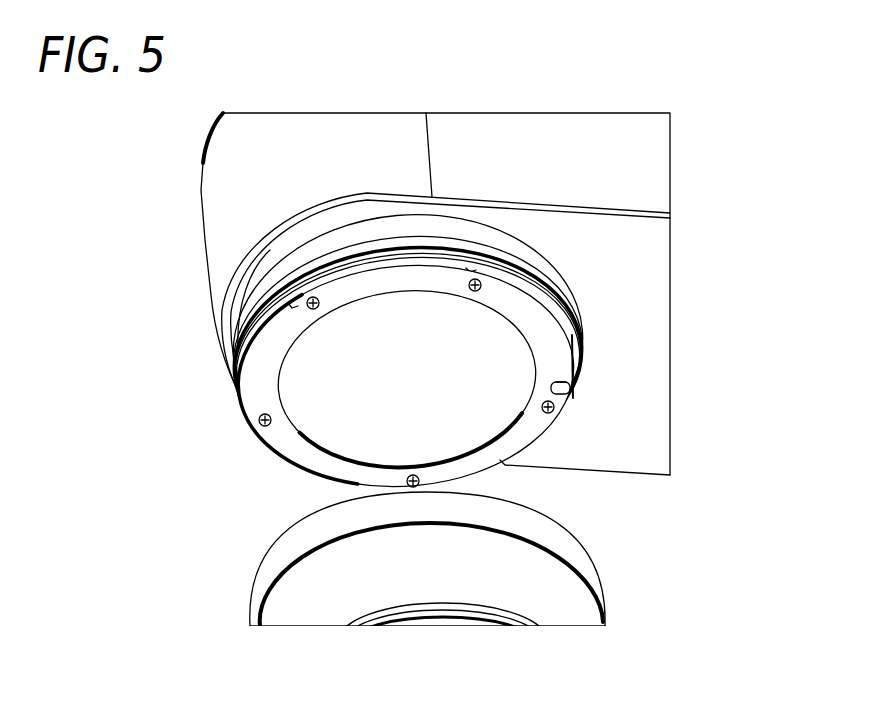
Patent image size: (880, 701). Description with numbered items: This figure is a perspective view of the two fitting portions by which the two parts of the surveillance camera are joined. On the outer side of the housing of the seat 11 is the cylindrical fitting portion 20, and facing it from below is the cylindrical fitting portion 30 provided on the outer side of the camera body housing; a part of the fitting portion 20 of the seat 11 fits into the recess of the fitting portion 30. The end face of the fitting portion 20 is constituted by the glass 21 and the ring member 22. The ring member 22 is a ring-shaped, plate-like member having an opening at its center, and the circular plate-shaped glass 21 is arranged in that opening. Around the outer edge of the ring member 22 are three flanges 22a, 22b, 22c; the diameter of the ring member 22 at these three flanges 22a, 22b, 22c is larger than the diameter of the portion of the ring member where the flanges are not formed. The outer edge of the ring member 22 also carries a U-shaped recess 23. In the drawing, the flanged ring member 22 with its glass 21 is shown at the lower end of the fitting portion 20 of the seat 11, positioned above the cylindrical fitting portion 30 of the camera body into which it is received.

The seat 11 is at (409, 114).
The fitting portion 20 is at (580, 273).
The glass 21 is at (372, 404).
The ring member 22 is at (287, 431).
The flange 22a is at (250, 359).
The flange 22b is at (560, 306).
The flange 22c is at (460, 482).
The U-shaped recess 23 is at (560, 386).
The fitting portion 30 is at (578, 552).